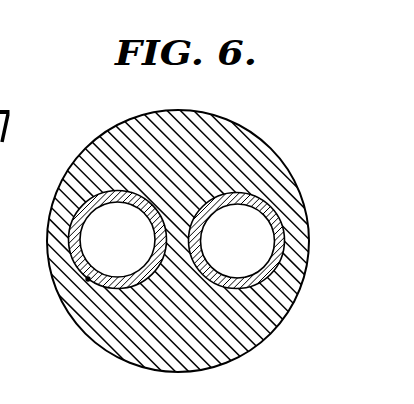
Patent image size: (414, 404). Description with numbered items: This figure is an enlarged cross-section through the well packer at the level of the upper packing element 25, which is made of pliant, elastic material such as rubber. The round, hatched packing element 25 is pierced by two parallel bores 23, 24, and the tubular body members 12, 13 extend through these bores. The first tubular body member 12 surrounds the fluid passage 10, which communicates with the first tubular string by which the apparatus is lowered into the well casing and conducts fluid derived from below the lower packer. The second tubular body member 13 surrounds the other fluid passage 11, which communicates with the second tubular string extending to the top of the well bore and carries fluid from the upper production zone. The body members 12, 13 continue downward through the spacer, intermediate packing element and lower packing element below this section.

The fluid passage 10 is at (117, 239).
The fluid passage 11 is at (238, 241).
The tubular body member 12 is at (73, 246).
The second tubular body member 13 is at (293, 286).
The parallel bore 23 is at (88, 280).
The parallel bore 24 is at (272, 212).
The upper packing element 25 is at (203, 128).